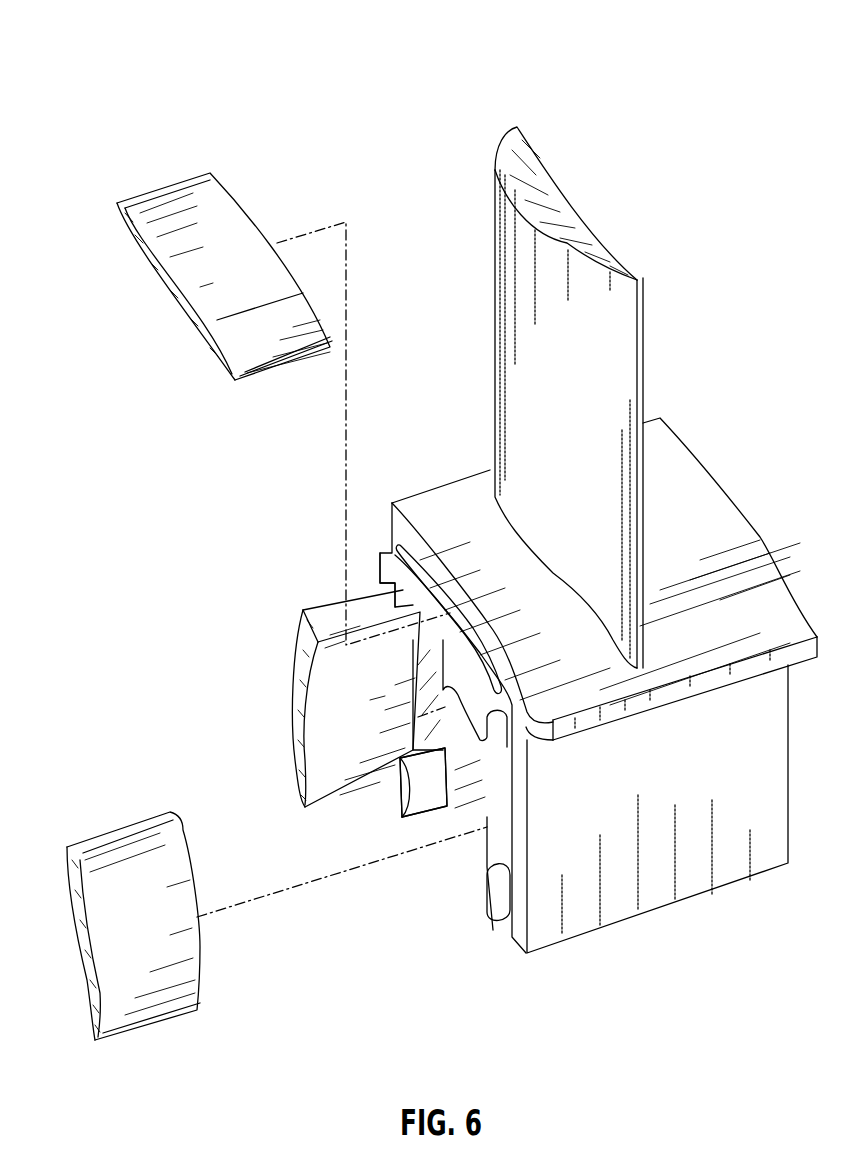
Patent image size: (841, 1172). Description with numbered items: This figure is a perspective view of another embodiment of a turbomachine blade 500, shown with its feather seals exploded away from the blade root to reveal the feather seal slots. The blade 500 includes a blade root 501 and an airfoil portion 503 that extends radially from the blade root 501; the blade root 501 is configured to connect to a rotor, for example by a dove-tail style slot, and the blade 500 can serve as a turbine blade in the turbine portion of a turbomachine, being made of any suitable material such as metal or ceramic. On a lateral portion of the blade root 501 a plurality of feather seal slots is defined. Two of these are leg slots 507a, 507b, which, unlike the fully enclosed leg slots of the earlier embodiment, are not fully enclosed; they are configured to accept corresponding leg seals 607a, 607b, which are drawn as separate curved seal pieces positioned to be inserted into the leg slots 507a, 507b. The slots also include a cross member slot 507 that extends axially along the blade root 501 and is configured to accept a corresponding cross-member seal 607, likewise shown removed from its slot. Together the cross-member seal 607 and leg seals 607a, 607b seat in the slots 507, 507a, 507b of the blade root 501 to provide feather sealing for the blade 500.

The turbomachine blade 500 is at (664, 46).
The blade root 501 is at (698, 503).
The airfoil portion 503 is at (540, 197).
The cross member slot 507 is at (392, 553).
The leg slot 507a is at (391, 598).
The leg slot 507b is at (494, 886).
The cross-member seal 607 is at (215, 203).
The leg seal 607a is at (297, 683).
The leg seal 607b is at (155, 980).